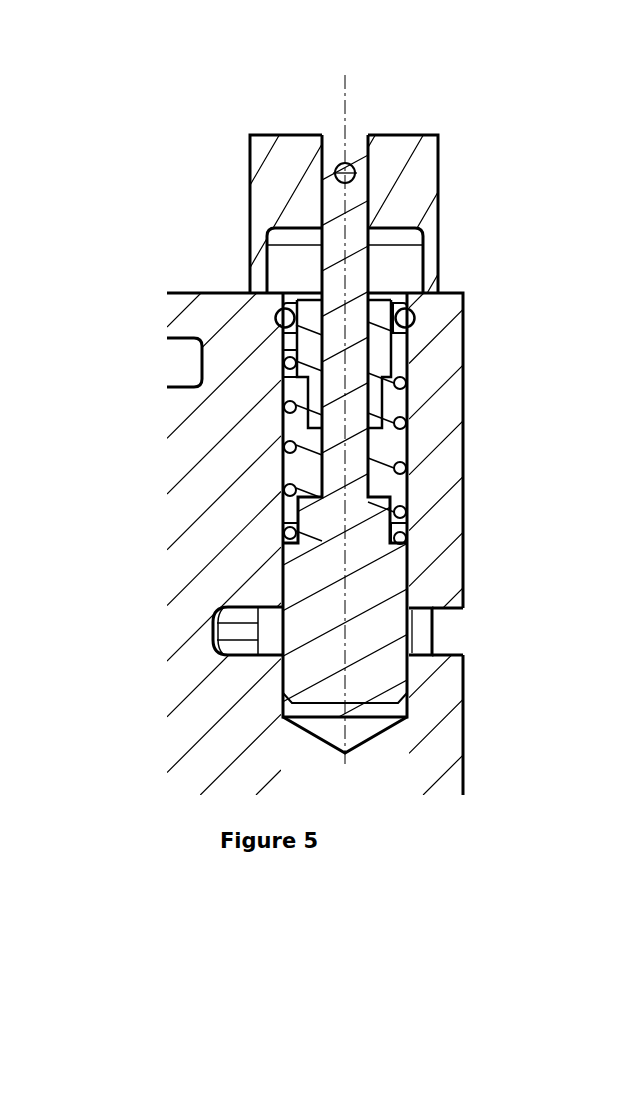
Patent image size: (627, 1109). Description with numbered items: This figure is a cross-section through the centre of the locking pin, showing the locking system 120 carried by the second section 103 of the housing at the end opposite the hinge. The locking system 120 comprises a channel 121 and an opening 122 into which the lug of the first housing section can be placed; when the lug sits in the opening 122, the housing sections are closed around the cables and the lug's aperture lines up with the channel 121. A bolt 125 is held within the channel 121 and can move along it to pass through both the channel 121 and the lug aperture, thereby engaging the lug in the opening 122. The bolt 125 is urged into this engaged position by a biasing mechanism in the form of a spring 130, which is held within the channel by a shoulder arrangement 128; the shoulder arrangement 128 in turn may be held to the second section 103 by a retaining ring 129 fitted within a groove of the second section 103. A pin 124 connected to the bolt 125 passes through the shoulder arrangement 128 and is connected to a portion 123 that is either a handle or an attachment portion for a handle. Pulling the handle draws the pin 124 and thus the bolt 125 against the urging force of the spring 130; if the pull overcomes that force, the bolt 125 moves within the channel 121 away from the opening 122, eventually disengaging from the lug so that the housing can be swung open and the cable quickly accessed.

The second section 103 is at (203, 530).
The locking system 120 is at (341, 464).
The channel 121 is at (328, 708).
The opening 122 is at (478, 602).
The portion 123 is at (424, 158).
The pin 124 is at (358, 157).
The bolt 125 is at (300, 577).
The shoulder arrangement 128 is at (389, 340).
The retaining ring 129 is at (418, 317).
The spring 130 is at (389, 424).